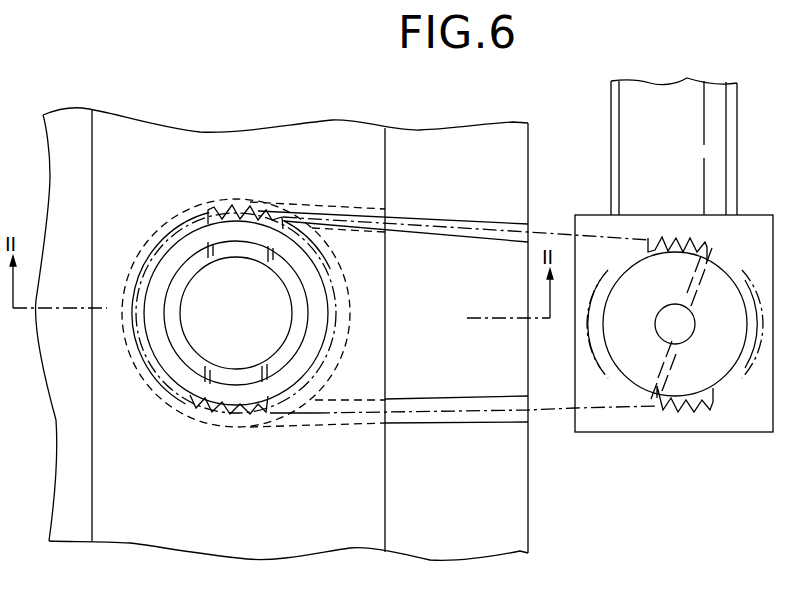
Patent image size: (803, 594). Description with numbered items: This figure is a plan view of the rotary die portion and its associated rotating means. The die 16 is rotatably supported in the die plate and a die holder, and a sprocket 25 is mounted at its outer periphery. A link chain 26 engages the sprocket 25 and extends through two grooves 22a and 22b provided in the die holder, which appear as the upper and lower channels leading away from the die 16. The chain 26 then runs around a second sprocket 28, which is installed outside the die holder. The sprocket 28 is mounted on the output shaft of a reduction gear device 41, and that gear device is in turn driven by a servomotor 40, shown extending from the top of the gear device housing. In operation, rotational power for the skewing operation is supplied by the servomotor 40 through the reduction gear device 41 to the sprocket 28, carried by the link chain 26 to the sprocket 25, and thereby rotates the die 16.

The die 16 is at (187, 353).
The groove 22a is at (452, 212).
The groove 22b is at (455, 398).
The sprocket 25 is at (264, 394).
The link chain 26 is at (360, 415).
The sprocket 28 is at (677, 387).
The servomotor 40 is at (742, 114).
The reduction gear device 41 is at (740, 423).